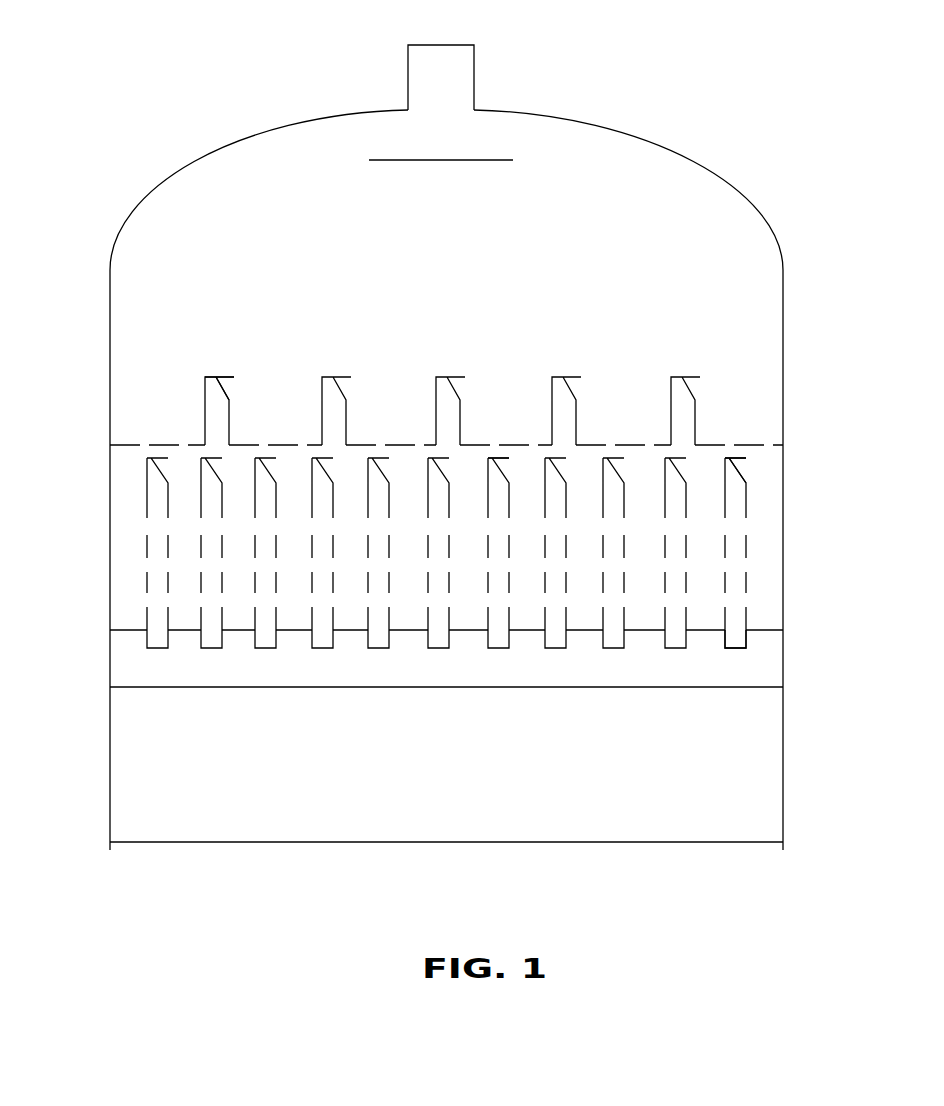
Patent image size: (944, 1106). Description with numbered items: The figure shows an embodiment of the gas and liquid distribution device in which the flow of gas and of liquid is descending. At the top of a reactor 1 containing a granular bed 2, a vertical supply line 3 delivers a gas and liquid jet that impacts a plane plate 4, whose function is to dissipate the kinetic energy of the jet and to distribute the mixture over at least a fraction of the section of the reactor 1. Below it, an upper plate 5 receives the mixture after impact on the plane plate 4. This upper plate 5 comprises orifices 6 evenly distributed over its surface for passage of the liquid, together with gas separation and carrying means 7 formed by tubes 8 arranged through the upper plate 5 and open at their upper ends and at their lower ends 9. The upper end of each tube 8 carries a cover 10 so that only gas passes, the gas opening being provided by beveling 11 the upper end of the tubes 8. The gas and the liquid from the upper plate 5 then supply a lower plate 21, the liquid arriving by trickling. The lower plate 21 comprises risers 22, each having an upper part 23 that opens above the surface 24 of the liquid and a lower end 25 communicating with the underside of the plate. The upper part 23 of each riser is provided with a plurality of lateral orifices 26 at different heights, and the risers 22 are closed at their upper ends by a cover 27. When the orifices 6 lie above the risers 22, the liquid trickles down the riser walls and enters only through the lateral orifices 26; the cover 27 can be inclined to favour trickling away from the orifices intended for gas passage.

The reactor 1 is at (733, 185).
The granular bed 2 is at (740, 775).
The vertical supply line 3 is at (474, 75).
The plane plate 4 is at (485, 160).
The upper plate 5 is at (755, 435).
The orifices 6 is at (615, 445).
The gas separation and carrying means 7 is at (190, 403).
The tubes 8 is at (222, 422).
The lower ends 9 is at (215, 440).
The cover 10 is at (215, 378).
The beveling 11 is at (228, 392).
The lower plate 21 is at (128, 616).
The risers 22 is at (752, 513).
The upper part 23 is at (740, 460).
The surface of the liquid 24 is at (140, 545).
The lower end 25 is at (735, 650).
The lateral orifices 26 is at (740, 568).
The cover 27 is at (498, 458).